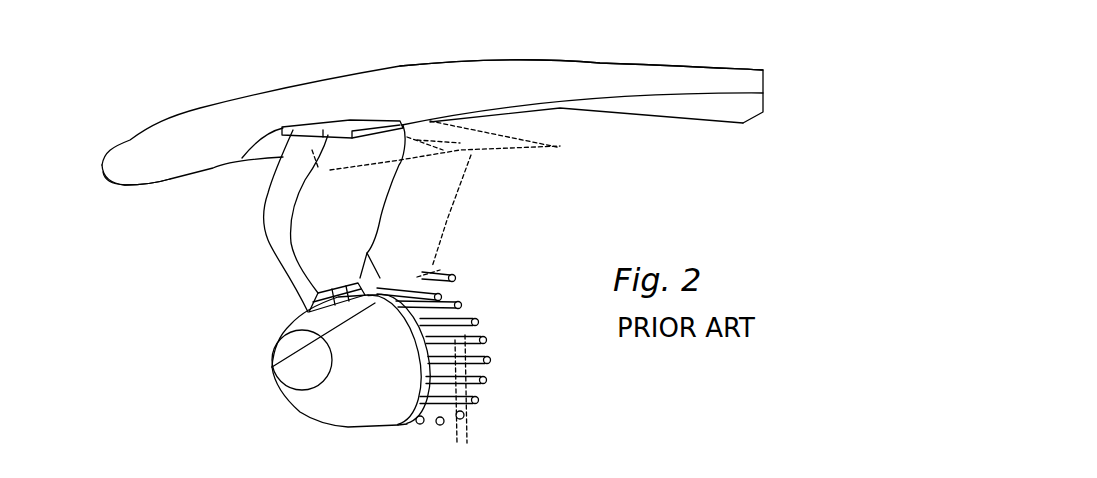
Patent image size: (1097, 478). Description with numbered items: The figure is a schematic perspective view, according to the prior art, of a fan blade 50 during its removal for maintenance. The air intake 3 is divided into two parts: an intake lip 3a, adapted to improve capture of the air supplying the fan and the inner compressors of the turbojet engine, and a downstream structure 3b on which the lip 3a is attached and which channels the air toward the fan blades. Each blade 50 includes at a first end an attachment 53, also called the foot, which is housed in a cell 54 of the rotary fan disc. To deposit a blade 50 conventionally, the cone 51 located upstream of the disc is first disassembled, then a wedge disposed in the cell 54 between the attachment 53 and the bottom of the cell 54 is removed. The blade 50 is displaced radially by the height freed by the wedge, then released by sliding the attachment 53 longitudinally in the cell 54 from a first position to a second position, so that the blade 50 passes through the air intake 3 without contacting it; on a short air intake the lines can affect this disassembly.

The air intake 3 is at (101, 177).
The intake lip 3a is at (160, 162).
The downstream structure 3b is at (522, 78).
The blade 50 is at (430, 192).
The cone 51 is at (365, 306).
The attachment 53 is at (478, 323).
The cell 54 is at (459, 419).